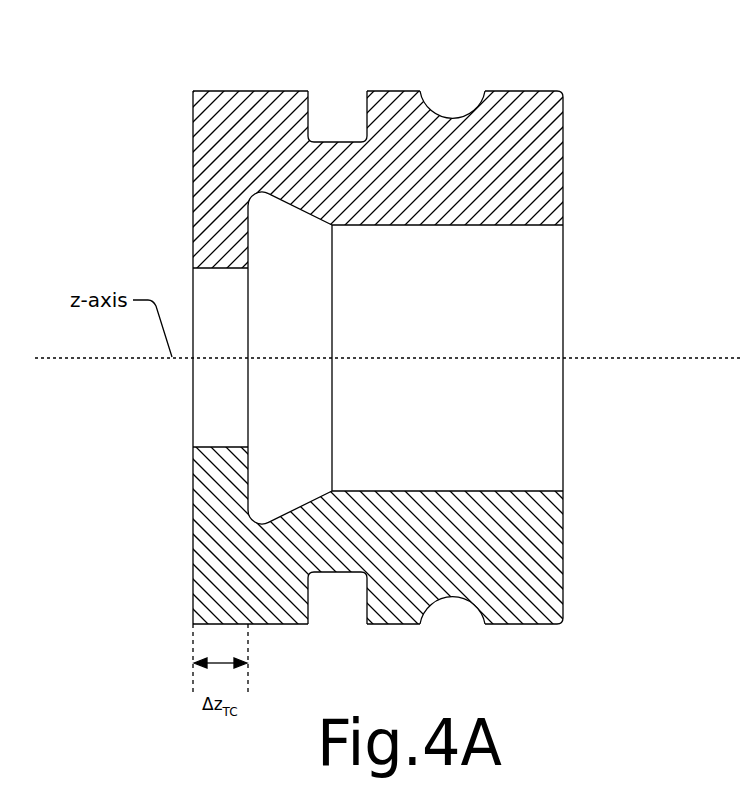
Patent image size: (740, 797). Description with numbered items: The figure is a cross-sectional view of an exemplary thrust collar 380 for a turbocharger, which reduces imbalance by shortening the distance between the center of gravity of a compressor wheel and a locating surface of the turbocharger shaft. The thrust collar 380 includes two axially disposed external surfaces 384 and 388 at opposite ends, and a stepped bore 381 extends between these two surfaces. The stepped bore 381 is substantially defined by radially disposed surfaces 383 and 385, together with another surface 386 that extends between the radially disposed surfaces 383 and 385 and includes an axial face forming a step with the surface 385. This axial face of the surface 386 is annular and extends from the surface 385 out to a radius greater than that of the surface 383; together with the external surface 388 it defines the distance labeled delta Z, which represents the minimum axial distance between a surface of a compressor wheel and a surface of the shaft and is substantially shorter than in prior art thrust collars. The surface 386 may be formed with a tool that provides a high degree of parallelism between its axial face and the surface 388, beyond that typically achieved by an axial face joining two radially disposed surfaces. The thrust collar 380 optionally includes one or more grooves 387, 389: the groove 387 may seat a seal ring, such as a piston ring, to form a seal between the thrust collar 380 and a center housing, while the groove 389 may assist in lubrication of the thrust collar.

The thrust collar 380 is at (402, 194).
The stepped bore 381 is at (453, 417).
The radially disposed surface 383 is at (430, 226).
The external surface 384 is at (564, 155).
The radially disposed surface 385 is at (215, 268).
The surface 386 is at (250, 224).
The groove 387 is at (312, 98).
The external surface 388 is at (193, 200).
The groove 389 is at (422, 98).